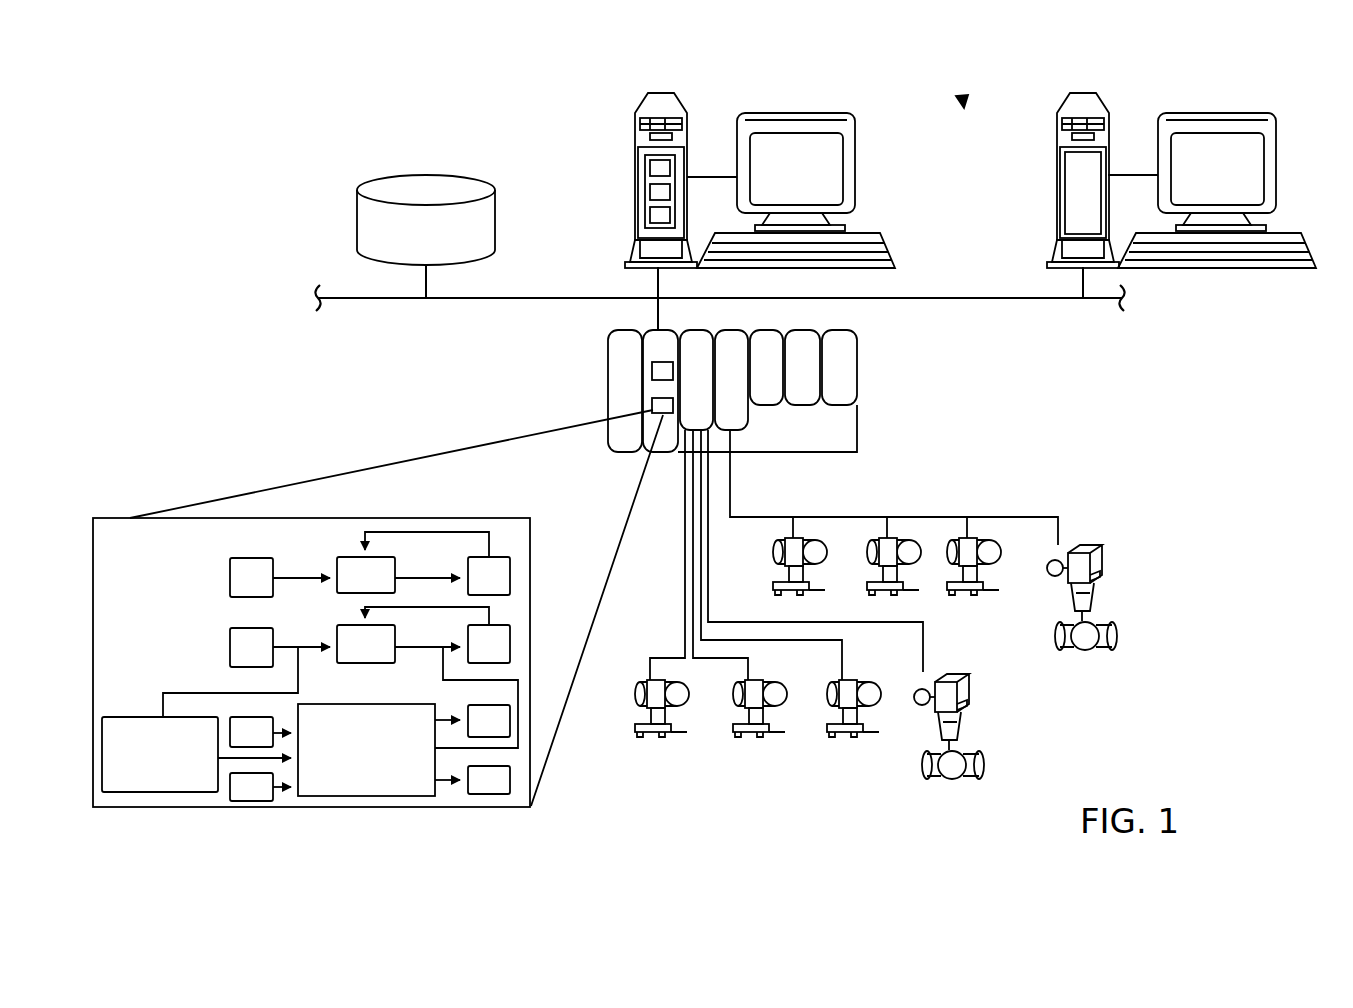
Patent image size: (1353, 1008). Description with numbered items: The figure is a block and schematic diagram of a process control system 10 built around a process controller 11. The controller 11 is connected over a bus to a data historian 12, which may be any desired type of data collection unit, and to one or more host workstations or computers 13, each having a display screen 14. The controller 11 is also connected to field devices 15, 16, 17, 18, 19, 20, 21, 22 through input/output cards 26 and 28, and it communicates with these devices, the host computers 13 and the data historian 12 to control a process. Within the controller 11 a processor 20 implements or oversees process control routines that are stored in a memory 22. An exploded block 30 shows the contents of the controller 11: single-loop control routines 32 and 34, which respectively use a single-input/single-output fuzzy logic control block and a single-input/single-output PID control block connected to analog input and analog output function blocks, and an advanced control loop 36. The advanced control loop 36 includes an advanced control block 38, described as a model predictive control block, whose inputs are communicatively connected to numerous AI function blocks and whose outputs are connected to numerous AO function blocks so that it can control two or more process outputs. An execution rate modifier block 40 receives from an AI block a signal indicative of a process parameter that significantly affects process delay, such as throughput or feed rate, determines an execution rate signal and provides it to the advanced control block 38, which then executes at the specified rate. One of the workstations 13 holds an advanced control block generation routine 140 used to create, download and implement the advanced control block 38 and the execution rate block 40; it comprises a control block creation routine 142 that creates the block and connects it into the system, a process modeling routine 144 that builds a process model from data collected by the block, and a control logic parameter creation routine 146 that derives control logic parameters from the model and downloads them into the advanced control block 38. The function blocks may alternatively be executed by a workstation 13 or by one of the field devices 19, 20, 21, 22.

The process control system 10 is at (961, 100).
The process controller 11 is at (655, 343).
The data historian 12 is at (357, 201).
The host workstation 13 is at (637, 134).
The display screen 14 is at (858, 157).
The field device 15 is at (648, 718).
The field device 16 is at (733, 718).
The field device 17 is at (825, 718).
The field device 18 is at (945, 717).
The field device 19 is at (800, 540).
The processor 20 is at (652, 370).
The field device 21 is at (965, 540).
The memory 22 is at (652, 405).
The input/output card 26 is at (700, 350).
The input/output card 28 is at (730, 345).
The exploded block 30 is at (455, 518).
The single-loop control routine 32 is at (210, 568).
The single-loop control routine 34 is at (216, 642).
The advanced control loop 36 is at (140, 692).
The advanced control block 38 is at (415, 796).
The execution rate modifier block 40 is at (152, 792).
The advanced control block generation routine 140 is at (680, 163).
The control block creation routine 142 is at (648, 165).
The process modeling routine 144 is at (648, 192).
The control logic parameter creation routine 146 is at (648, 218).